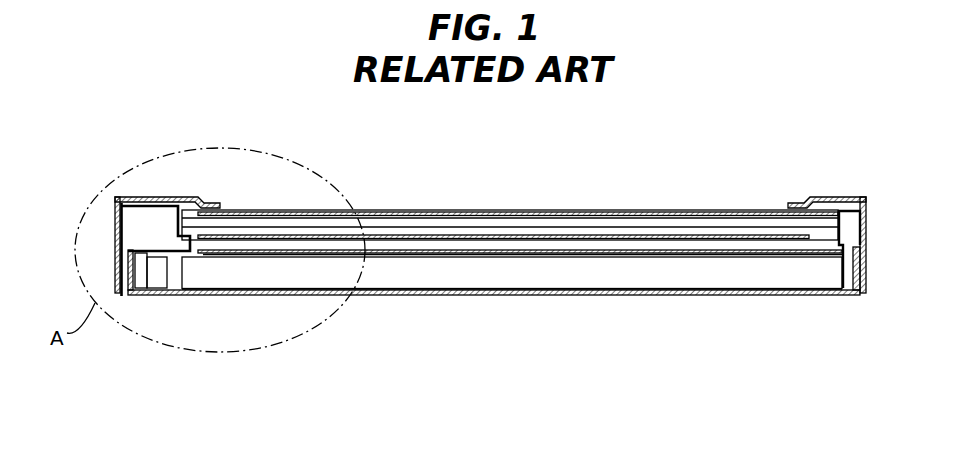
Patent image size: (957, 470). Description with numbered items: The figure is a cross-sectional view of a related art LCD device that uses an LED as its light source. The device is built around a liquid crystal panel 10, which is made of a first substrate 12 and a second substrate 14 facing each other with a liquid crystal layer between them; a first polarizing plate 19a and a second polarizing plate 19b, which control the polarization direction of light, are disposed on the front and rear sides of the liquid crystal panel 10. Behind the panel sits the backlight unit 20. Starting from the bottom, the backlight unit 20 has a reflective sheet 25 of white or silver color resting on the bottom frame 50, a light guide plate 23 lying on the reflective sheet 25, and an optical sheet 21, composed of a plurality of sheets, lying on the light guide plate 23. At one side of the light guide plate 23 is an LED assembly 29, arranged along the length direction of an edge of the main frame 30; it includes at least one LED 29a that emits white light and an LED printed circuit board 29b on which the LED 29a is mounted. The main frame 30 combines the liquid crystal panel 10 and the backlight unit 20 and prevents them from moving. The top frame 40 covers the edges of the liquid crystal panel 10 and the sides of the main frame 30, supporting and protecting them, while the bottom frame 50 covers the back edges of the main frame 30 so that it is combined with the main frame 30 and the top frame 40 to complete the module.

The liquid crystal panel 10 is at (510, 172).
The first substrate 12 is at (468, 230).
The second substrate 14 is at (428, 220).
The first polarizing plate 19a is at (622, 237).
The second polarizing plate 19b is at (570, 208).
The backlight unit 20 is at (476, 350).
The optical sheet 21 is at (312, 256).
The light guide plate 23 is at (270, 270).
The reflective sheet 25 is at (230, 295).
The LED assembly 29 is at (154, 335).
The LED 29a is at (159, 275).
The LED printed circuit board 29b is at (140, 285).
The main frame 30 is at (140, 225).
The top frame 40 is at (168, 197).
The bottom frame 50 is at (500, 293).